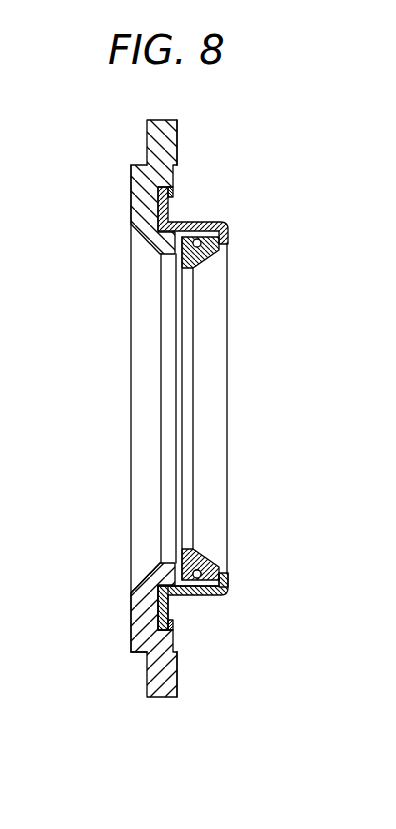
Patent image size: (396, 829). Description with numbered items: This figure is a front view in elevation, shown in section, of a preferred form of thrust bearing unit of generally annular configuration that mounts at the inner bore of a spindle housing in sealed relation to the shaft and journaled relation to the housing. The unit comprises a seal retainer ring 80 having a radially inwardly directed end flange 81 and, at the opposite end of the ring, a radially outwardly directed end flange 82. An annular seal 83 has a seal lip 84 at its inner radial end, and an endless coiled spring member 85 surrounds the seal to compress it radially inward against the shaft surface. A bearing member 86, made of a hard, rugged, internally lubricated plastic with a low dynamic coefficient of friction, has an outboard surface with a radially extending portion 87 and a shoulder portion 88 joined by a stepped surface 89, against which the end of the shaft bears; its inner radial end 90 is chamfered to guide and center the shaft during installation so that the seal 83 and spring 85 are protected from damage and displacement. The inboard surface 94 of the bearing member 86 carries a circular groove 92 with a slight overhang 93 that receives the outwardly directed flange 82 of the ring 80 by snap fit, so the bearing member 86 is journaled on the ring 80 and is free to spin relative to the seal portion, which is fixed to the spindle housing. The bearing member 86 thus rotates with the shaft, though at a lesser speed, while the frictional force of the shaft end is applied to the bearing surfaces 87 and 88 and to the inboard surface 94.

The seal retainer ring 80 is at (200, 594).
The radially inwardly directed end flange 81 is at (222, 586).
The radially outwardly directed end flange 82 is at (165, 619).
The annular seal 83 is at (210, 570).
The seal lip 84 is at (190, 558).
The endless coiled spring member 85 is at (212, 594).
The bearing member 86 is at (118, 606).
The radially extending portion 87 is at (147, 150).
The shoulder portion 88 is at (131, 592).
The stepped surface 89 is at (132, 651).
The inner radial end 90 is at (158, 572).
The circular groove 92 is at (170, 224).
The overhang 93 is at (168, 194).
The inboard surface 94 is at (178, 148).